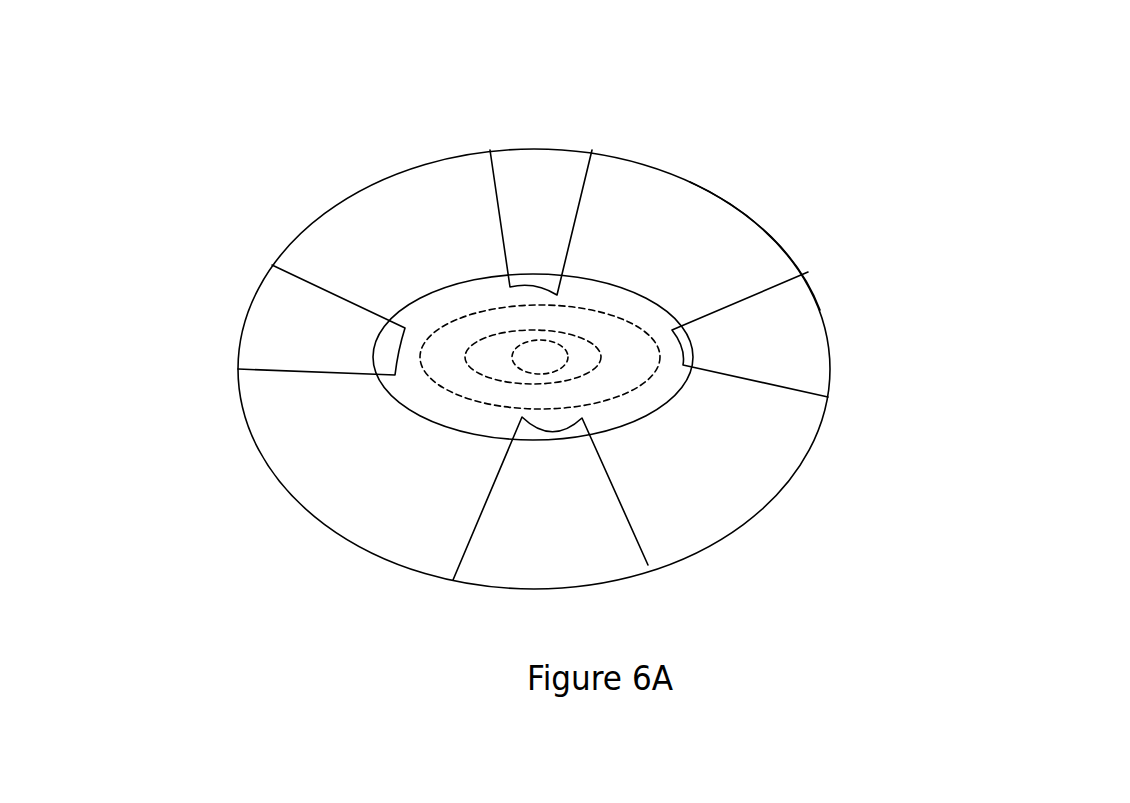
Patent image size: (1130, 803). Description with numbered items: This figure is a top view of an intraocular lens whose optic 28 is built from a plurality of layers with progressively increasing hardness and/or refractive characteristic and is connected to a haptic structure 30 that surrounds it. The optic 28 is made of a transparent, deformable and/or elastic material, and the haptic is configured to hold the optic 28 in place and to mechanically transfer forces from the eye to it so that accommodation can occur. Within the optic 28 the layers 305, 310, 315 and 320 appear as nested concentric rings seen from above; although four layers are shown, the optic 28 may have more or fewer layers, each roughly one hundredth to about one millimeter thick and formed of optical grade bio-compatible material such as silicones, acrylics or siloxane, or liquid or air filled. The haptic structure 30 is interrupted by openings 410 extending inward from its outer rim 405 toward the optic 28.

The disc assembly 30 is at (523, 139).
The optic 28 is at (430, 258).
The layer 305 is at (477, 293).
The layer 310 is at (615, 330).
The layer 315 is at (582, 364).
The layer 320 is at (535, 352).
The outer rim edge 405 is at (775, 240).
The radial slot 410 is at (762, 295).